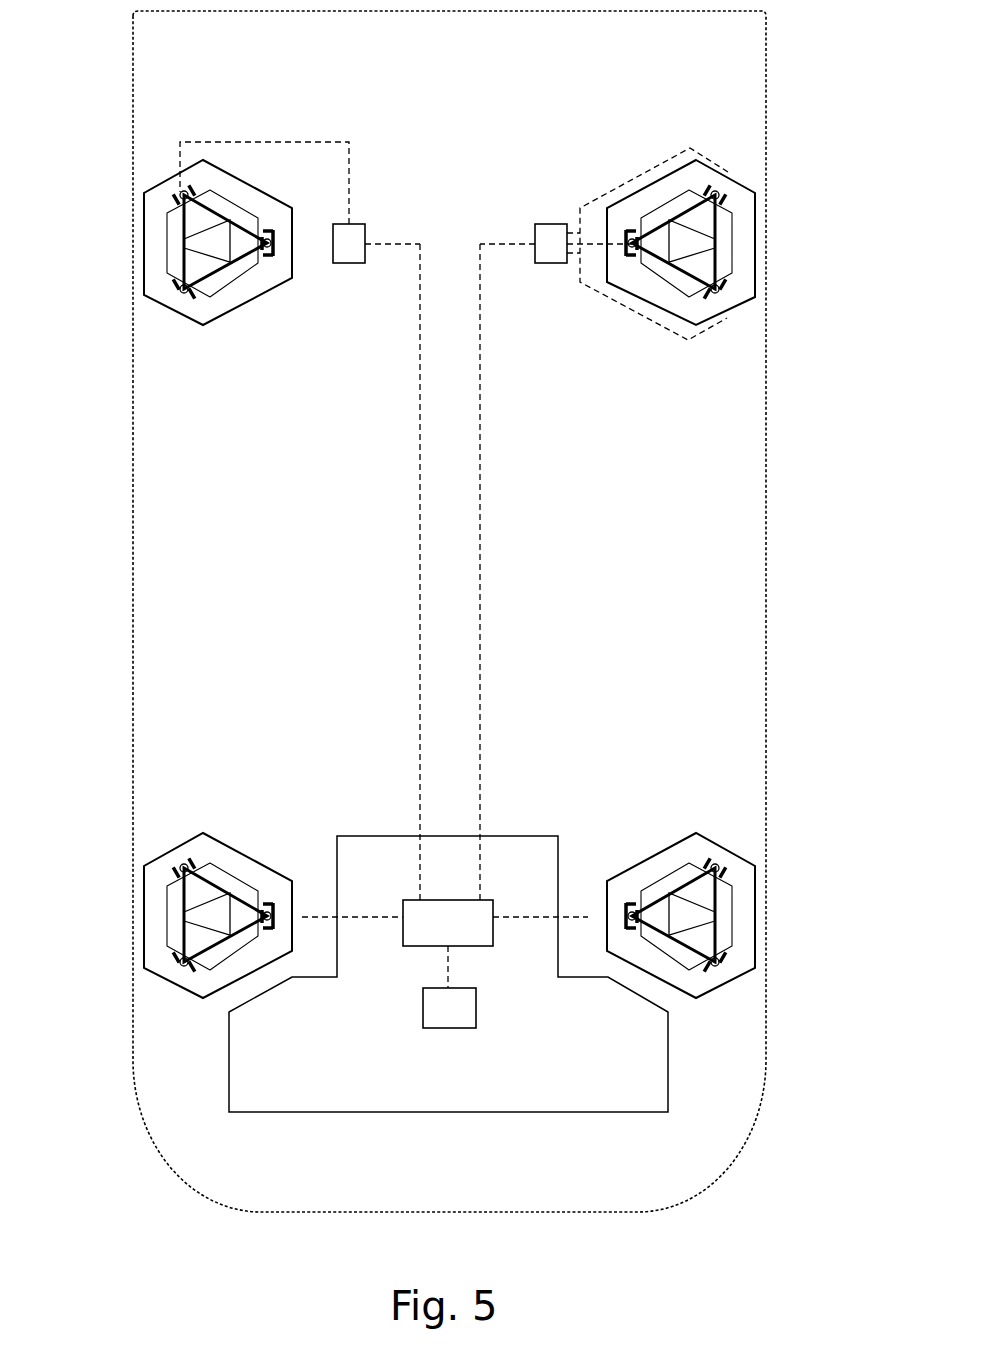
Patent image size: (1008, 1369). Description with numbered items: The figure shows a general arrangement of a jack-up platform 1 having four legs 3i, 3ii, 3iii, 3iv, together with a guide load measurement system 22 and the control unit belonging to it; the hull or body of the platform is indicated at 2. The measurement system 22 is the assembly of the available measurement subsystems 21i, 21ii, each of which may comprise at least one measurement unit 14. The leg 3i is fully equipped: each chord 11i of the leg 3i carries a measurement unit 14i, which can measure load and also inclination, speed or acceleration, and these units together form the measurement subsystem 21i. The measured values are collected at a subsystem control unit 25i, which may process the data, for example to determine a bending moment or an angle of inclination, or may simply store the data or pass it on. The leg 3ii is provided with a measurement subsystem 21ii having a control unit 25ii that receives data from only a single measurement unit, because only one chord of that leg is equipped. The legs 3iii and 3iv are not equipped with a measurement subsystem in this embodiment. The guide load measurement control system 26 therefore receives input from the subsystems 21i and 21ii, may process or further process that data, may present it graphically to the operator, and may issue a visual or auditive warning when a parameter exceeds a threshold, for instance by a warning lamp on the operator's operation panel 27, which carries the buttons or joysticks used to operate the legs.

The jack-up platform 1 is at (462, 611).
The vehicle body 2 is at (203, 1158).
The leg 3i is at (700, 252).
The leg 3ii is at (205, 247).
The leg 3iii is at (715, 925).
The leg 3iv is at (207, 923).
The chord 11i is at (610, 212).
The measurement unit 14 is at (180, 192).
The measurement unit 14i is at (722, 190).
The measurement subsystem 21i is at (526, 200).
The measurement subsystem 21ii is at (366, 200).
The guide load measurement system 22 is at (172, 723).
The subsystem control unit 25i is at (547, 243).
The control unit 25ii is at (350, 257).
The guide load measurement control system 26 is at (483, 917).
The operator's operation panel 27 is at (448, 1012).